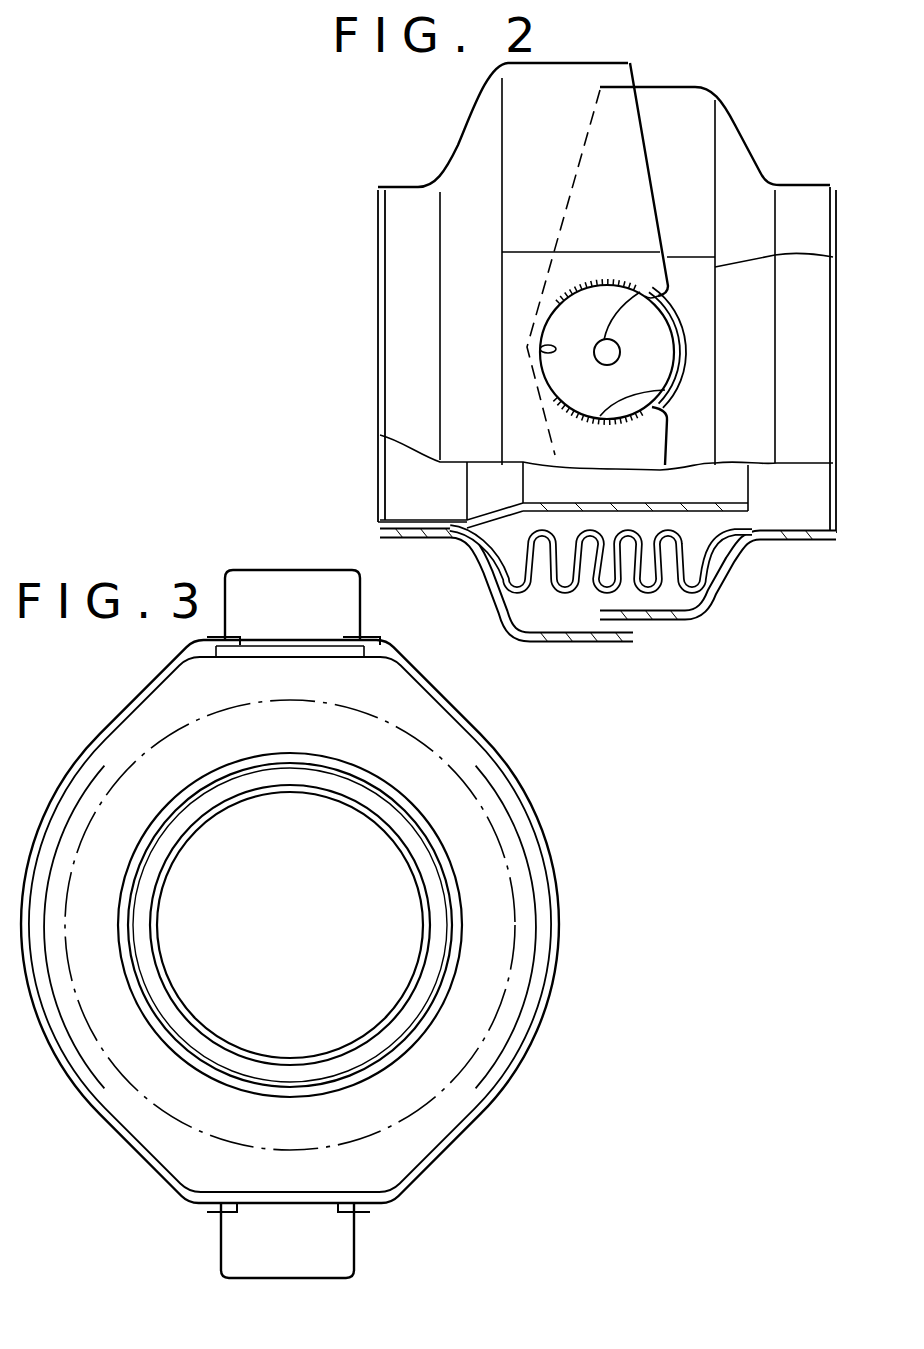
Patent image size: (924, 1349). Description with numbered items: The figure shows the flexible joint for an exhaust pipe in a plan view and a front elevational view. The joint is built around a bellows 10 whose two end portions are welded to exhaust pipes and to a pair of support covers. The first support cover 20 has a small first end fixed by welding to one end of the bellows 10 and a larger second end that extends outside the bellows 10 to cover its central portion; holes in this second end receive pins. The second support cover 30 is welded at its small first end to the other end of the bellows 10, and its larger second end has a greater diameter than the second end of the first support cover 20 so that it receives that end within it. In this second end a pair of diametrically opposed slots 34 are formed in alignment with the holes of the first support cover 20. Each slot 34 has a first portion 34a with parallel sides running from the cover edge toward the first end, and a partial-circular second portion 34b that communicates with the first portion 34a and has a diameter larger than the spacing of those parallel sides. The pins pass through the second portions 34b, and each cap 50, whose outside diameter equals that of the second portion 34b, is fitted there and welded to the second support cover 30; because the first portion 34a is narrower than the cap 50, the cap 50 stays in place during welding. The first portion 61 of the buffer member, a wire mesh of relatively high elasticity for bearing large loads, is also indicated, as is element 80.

In FIG. 2, the bellows 10 is at (650, 588).
In FIG. 2, the first support cover 20 is at (757, 148).
In FIG. 3, the first support cover 20 is at (473, 773).
In FIG. 2, the second support cover 30 is at (462, 130).
In FIG. 3, the second support cover 30 is at (474, 720).
In FIG. 2, the slot 34 is at (660, 393).
In FIG. 2, the first portion of the slot 34a is at (671, 310).
In FIG. 2, the second portion of the slot 34b is at (540, 349).
In FIG. 2, the cap 50 is at (567, 330).
In FIG. 3, the cap 50 is at (343, 592).
In FIG. 3, the first portion of the buffer member 61 is at (306, 652).
In FIG. 2, the pin 80 is at (640, 292).